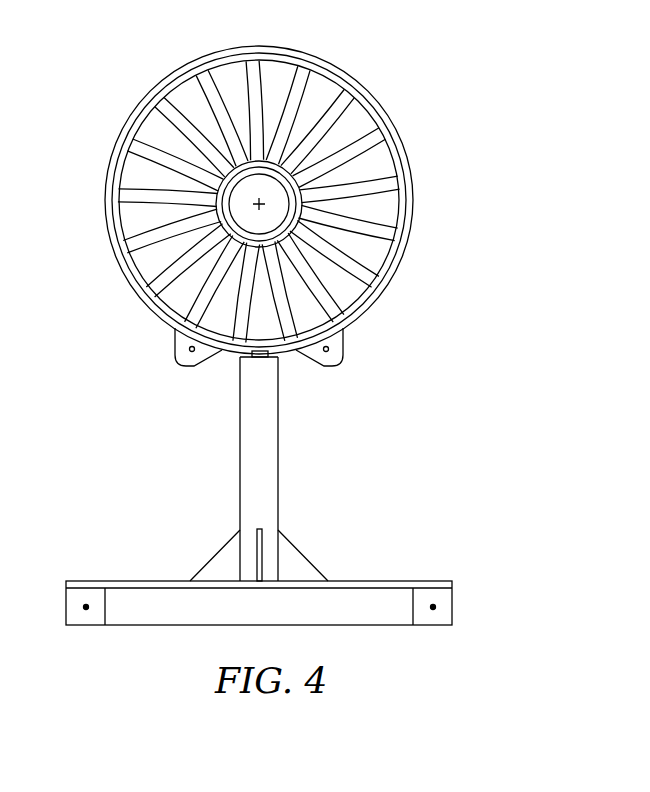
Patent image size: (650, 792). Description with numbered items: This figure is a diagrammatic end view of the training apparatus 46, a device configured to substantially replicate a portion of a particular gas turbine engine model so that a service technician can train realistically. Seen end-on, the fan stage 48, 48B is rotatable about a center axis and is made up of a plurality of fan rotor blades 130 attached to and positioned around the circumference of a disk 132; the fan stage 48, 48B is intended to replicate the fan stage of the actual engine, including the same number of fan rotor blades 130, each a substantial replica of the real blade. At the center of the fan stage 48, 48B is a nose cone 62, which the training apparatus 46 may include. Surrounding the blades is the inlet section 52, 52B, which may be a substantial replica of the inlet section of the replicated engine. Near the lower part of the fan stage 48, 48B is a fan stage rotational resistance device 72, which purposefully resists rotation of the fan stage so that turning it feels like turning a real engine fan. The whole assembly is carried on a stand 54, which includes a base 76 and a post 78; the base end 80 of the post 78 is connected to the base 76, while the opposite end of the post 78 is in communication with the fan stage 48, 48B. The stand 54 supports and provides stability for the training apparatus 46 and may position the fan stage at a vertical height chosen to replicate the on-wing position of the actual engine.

The training apparatus 46 is at (106, 105).
The inlet section 52 is at (281, 182).
The inlet section 52B is at (367, 90).
The fan stage 48 is at (350, 200).
The fan stage 48B is at (410, 132).
The fan rotor blades 130 is at (370, 273).
The disk 132 is at (296, 187).
The nose cone 62 is at (243, 216).
The fan stage rotational resistance device 72 is at (354, 354).
The stand 54 is at (288, 469).
The post 78 is at (257, 443).
The base end 80 is at (304, 567).
The base 76 is at (447, 600).